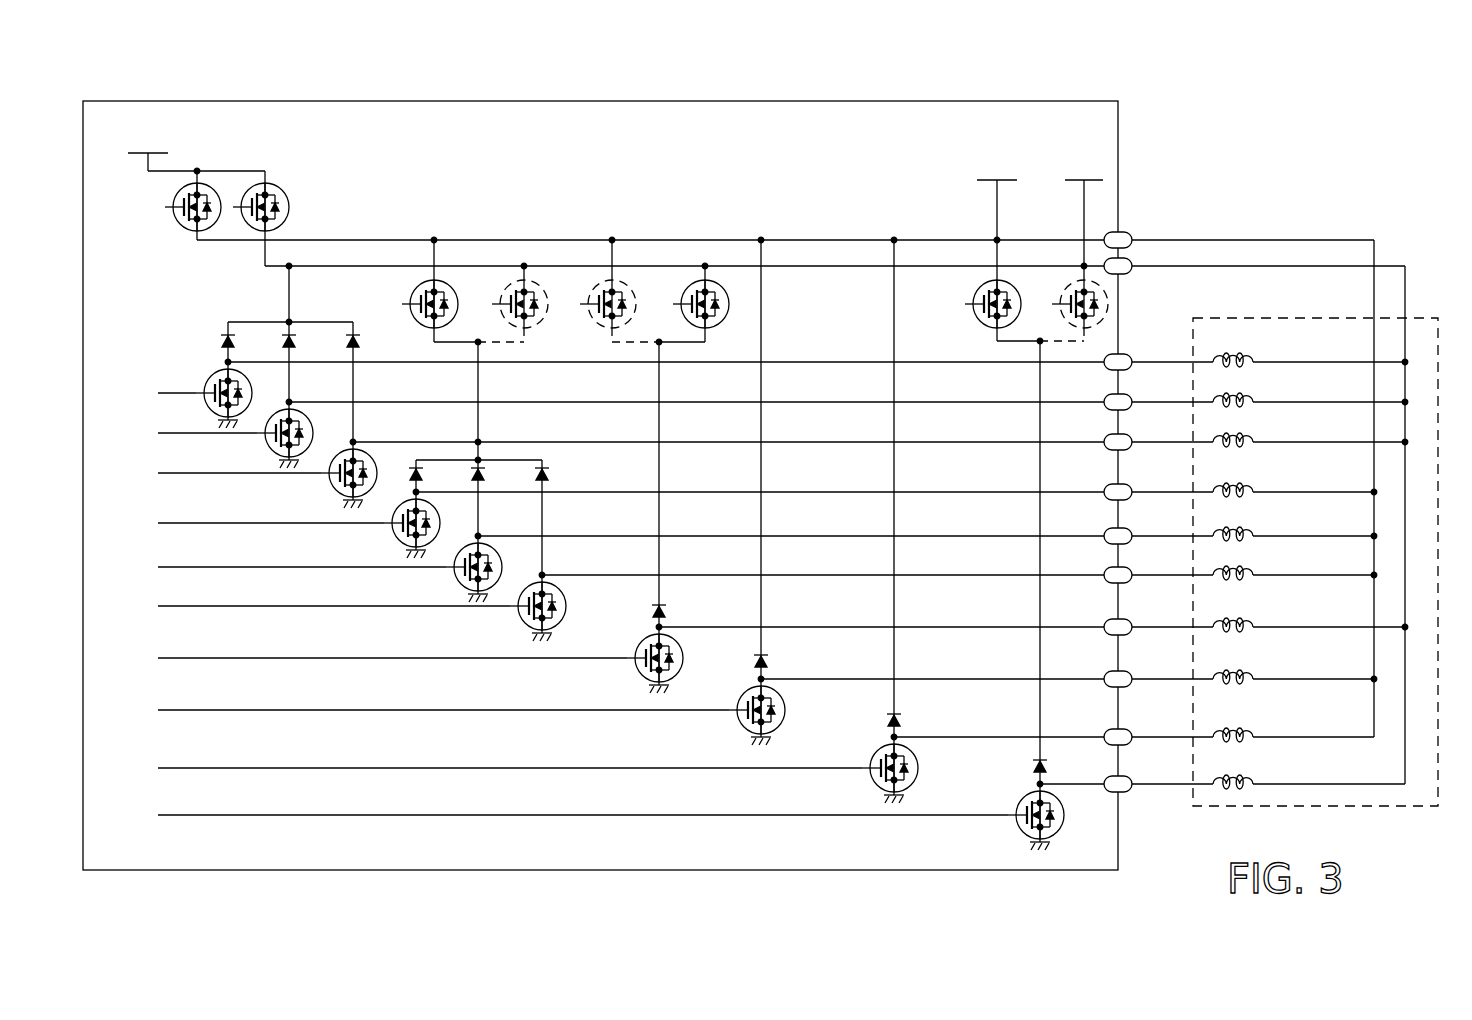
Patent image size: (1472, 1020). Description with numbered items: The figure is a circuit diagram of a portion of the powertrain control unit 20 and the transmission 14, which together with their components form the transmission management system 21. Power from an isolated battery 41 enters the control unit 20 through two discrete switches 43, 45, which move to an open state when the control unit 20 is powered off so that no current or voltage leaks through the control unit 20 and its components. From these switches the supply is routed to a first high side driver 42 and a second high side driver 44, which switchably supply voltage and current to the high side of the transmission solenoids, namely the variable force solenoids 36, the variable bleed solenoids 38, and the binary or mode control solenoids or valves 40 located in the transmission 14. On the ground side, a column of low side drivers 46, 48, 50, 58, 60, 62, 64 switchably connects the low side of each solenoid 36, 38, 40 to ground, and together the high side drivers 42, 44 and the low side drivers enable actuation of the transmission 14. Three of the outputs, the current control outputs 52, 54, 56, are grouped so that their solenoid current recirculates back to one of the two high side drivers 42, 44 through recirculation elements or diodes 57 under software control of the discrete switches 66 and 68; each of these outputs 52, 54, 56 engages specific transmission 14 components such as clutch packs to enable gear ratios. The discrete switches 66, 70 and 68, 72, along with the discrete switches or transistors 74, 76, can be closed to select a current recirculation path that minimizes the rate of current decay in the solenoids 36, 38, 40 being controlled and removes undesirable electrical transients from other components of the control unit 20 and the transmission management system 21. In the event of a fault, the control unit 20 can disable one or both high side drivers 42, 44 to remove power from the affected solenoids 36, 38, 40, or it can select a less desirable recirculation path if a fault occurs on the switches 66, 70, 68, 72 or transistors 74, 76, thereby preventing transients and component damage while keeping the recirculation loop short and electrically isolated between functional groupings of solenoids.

The transmission 14 is at (1420, 318).
The powertrain control unit 20 is at (1088, 85).
The transmission management system 21 is at (1283, 121).
The variable force solenoid 36 is at (1291, 518).
The variable bleed solenoid 38 is at (1243, 365).
The binary or mode control solenoid 40 is at (1243, 740).
The battery 41 is at (141, 152).
The first high side driver 42 is at (987, 177).
The discrete switch 43 is at (196, 236).
The second high side driver 44 is at (1074, 177).
The discrete switch 45 is at (285, 195).
The low side driver 46 is at (1130, 354).
The low side driver 48 is at (1130, 394).
The low side driver 50 is at (1130, 434).
The current control output 52 is at (1130, 484).
The current control output 54 is at (1130, 528).
The current control output 56 is at (1130, 567).
The recirculation diode 57 is at (284, 340).
The low side driver 58 is at (1130, 619).
The low side driver 60 is at (1130, 671).
The low side driver 62 is at (1130, 729).
The low side driver 64 is at (1130, 793).
The discrete switch 66 is at (447, 290).
The discrete switch 68 is at (538, 290).
The discrete switch 70 is at (625, 290).
The discrete switch 72 is at (718, 290).
The discrete switch or transistor 74 is at (975, 318).
The discrete switch or transistor 76 is at (1104, 299).